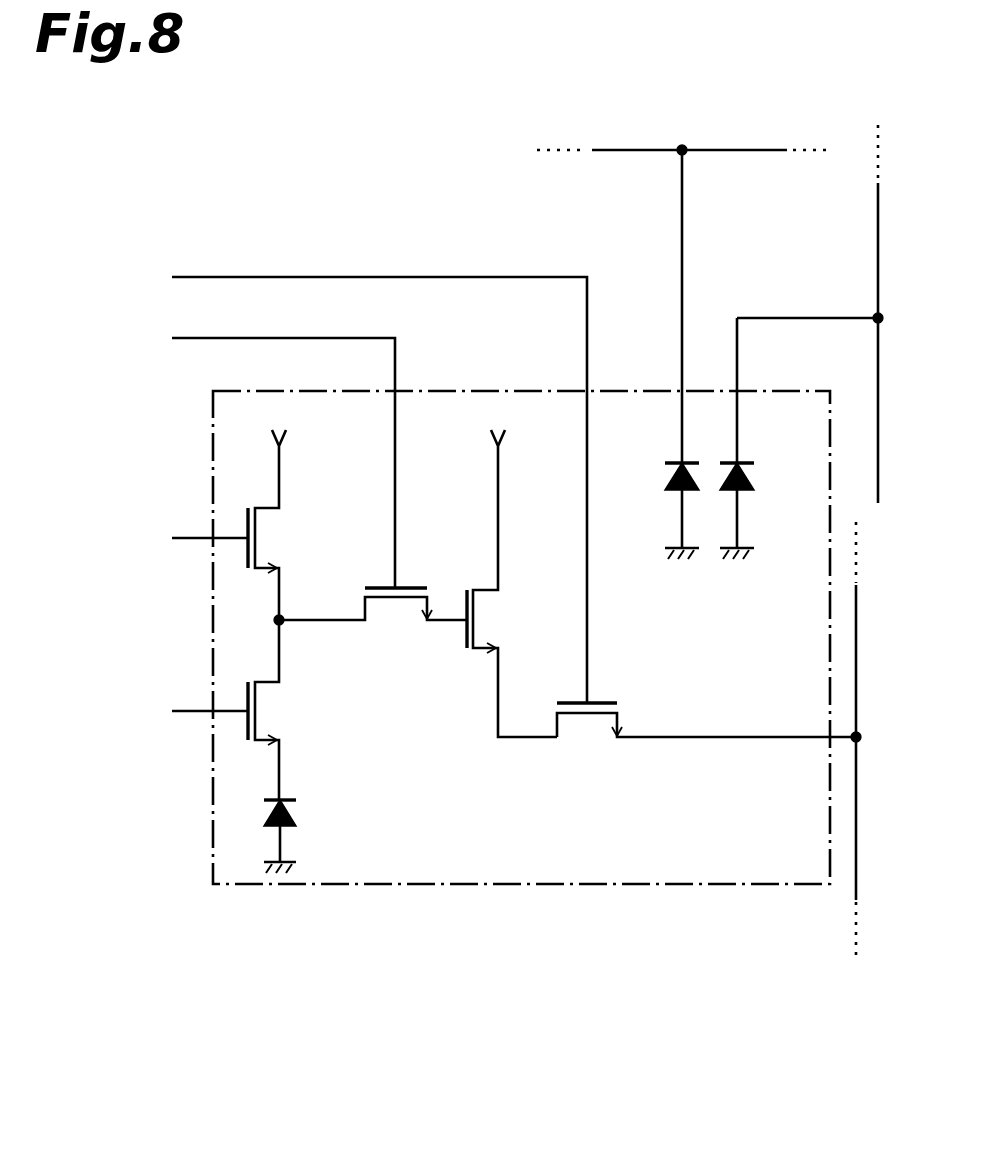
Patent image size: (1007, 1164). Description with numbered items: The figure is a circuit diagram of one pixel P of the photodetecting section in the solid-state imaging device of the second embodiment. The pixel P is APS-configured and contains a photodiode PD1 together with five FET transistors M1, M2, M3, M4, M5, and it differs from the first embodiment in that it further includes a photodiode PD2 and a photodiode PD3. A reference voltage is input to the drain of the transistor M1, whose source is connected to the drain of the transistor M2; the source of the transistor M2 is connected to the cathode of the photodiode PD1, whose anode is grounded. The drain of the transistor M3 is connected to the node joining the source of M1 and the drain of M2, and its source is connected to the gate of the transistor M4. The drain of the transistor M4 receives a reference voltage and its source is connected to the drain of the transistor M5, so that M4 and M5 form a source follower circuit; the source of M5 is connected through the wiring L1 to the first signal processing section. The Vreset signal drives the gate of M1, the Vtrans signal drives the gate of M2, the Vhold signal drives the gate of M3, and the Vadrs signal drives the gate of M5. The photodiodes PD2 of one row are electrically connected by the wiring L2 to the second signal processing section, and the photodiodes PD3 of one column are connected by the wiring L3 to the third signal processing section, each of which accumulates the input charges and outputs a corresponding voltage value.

The pixel P is at (503, 884).
The transistor M1 is at (282, 525).
The transistor M2 is at (282, 710).
The transistor M3 is at (373, 623).
The transistor M4 is at (512, 583).
The transistor M5 is at (706, 739).
The photodiode PD1 is at (336, 836).
The photodiode PD2 is at (645, 354).
The photodiode PD3 is at (774, 438).
The wiring L1 is at (856, 887).
The wiring L2 is at (630, 150).
The wiring L3 is at (878, 286).
The Vadrs(m) signal Vadrs is at (154, 269).
The Vhold(m) signal Vhold is at (154, 330).
The Vreset(m) signal Vreset is at (154, 530).
The Vtrans(m) signal Vtrans is at (154, 703).